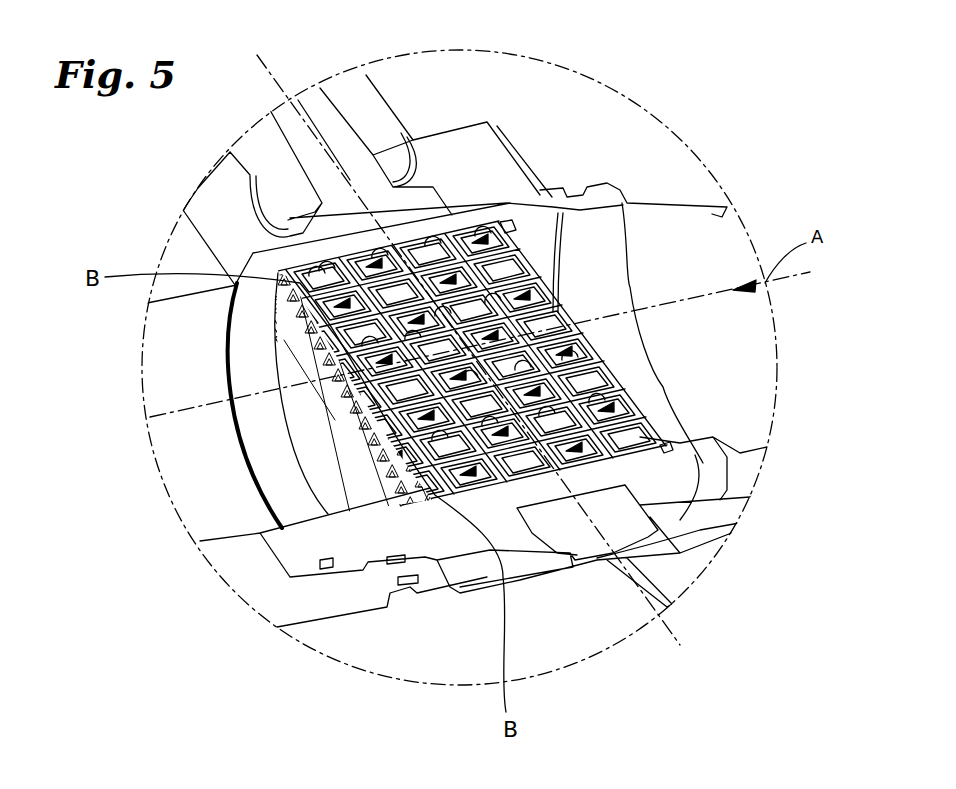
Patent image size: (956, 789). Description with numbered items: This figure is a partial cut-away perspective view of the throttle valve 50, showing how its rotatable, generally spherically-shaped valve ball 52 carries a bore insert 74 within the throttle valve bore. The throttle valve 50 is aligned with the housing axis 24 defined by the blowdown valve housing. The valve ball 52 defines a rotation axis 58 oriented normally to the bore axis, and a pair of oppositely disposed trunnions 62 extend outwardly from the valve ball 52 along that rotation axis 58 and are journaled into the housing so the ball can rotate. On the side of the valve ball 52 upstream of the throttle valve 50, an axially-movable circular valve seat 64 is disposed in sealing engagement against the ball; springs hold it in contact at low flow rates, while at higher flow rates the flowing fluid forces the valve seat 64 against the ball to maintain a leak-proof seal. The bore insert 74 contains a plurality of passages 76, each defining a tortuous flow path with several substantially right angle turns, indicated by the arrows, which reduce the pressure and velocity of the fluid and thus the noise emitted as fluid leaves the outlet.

The throttle valve 50 is at (143, 190).
The rotation axis 58 is at (268, 75).
The trunnions 62 is at (340, 137).
The valve seat 64 is at (593, 222).
The bore insert 74 is at (520, 258).
The housing axis 24 is at (803, 273).
The valve ball 52 is at (683, 455).
The passages 76 is at (335, 508).